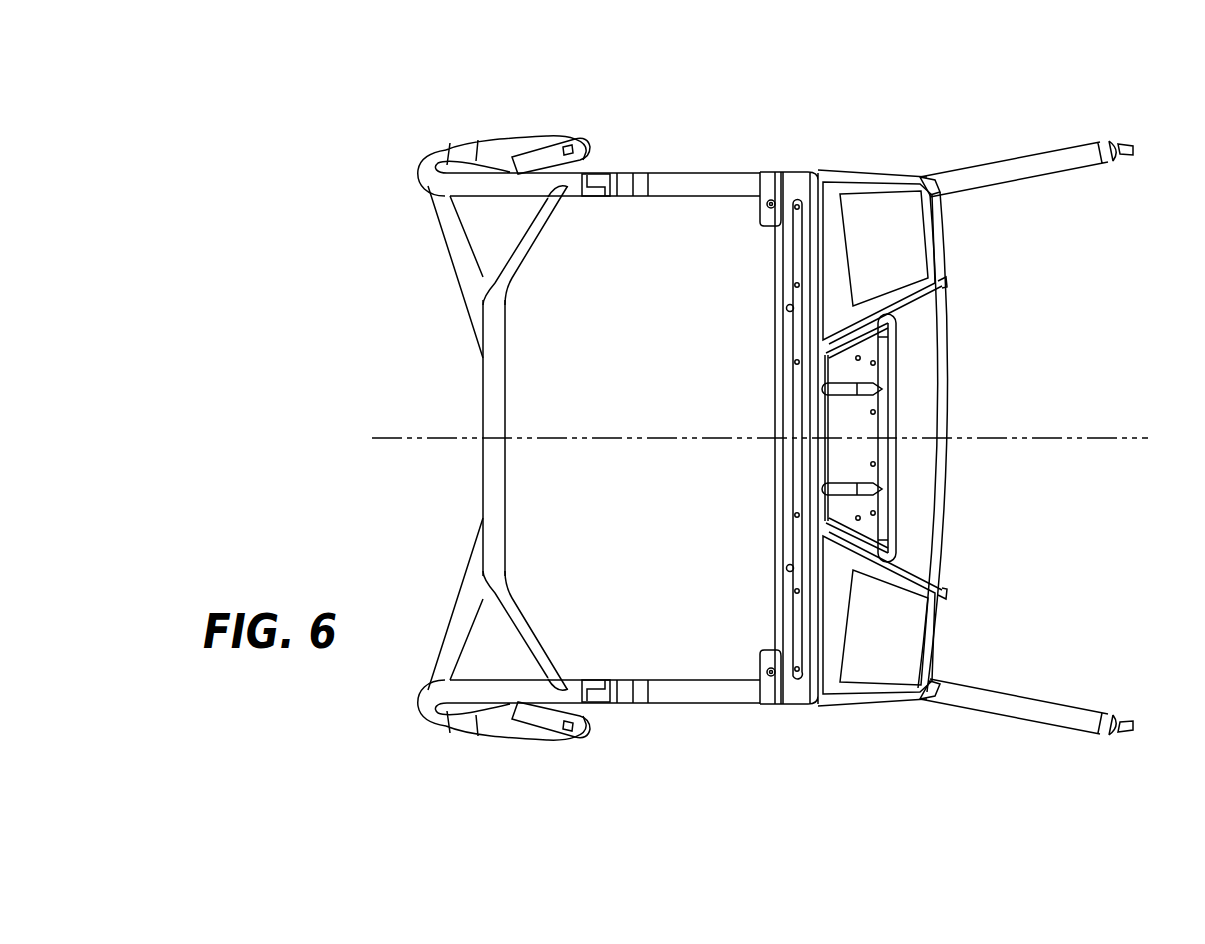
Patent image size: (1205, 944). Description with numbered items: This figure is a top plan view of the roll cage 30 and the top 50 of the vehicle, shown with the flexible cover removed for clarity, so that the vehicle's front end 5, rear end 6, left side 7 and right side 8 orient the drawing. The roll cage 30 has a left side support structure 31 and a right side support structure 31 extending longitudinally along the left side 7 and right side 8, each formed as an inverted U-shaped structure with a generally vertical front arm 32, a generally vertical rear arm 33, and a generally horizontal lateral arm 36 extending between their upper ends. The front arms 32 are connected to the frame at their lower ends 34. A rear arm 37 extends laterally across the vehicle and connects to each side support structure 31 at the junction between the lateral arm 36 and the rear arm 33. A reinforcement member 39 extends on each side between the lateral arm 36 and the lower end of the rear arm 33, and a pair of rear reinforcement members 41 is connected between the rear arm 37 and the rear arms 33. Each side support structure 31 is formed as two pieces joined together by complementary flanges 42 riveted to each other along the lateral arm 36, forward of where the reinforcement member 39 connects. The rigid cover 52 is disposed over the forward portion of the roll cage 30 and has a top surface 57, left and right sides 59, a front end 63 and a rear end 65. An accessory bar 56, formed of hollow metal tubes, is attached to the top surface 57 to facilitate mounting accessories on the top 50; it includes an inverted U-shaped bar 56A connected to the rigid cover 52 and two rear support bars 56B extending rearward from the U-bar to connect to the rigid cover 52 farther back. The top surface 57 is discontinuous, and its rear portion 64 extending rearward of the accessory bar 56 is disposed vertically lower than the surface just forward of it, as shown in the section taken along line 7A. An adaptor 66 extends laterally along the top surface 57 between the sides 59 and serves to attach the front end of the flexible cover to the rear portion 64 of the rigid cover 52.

The front end 5 is at (1140, 279).
The rear end 6 is at (326, 263).
The left side 7 is at (839, 101).
The section line 7A is at (1148, 398).
The right side 8 is at (884, 724).
The roll cage 30 is at (727, 425).
The side support structure 31 is at (763, 433).
The front arm 32 is at (978, 170).
The rear arm 33 is at (456, 158).
The lower end 34 is at (1124, 148).
The lateral arm 36 is at (665, 180).
The rear arm 37 is at (497, 512).
The reinforcement member 39 is at (545, 150).
The rear reinforcement member 41 is at (462, 257).
The complementary flanges 42 is at (597, 194).
The top 50 is at (859, 408).
The rigid cover 52 is at (903, 222).
The accessory bar 56 is at (883, 378).
The inverted U-shaped bar 56A is at (883, 484).
The rear support bar 56B is at (826, 389).
The top surface 57 is at (908, 622).
The side 59 is at (895, 178).
The front end 63 is at (942, 502).
The rear portion 64 is at (796, 717).
The rear end 65 is at (768, 333).
The adaptor 66 is at (802, 200).